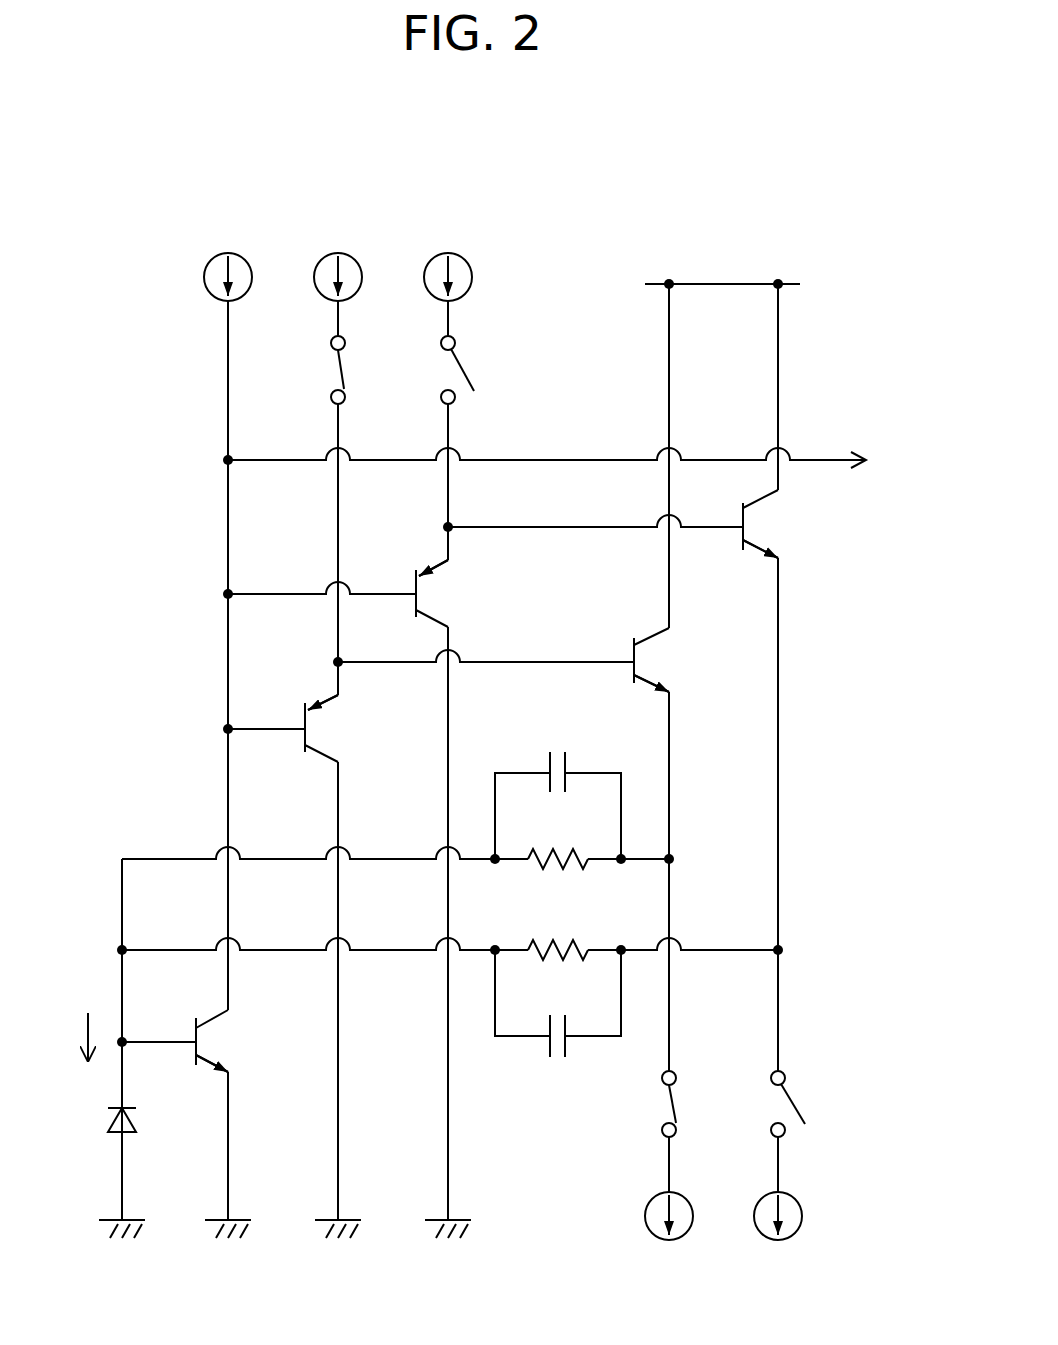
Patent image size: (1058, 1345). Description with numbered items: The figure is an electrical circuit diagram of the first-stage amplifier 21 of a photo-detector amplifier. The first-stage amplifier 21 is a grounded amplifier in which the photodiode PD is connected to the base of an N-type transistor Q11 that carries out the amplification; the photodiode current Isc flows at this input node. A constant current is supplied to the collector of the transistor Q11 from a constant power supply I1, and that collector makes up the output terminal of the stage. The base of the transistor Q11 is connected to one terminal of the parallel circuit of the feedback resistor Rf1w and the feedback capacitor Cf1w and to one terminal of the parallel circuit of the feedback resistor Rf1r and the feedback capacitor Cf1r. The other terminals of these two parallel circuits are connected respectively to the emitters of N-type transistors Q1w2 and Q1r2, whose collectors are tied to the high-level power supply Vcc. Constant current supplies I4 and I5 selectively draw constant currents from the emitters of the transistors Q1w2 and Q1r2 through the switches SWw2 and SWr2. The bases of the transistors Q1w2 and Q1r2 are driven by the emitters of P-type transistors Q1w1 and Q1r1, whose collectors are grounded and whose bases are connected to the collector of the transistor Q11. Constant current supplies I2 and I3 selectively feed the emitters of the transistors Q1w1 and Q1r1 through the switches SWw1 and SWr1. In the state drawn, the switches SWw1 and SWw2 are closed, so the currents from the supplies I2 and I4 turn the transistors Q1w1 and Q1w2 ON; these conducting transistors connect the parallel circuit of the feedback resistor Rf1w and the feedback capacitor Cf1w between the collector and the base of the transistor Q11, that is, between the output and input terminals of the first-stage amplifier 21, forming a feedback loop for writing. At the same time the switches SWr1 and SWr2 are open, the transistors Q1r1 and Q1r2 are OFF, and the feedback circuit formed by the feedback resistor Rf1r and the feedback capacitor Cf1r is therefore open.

The first-stage amplifier 21 is at (104, 312).
The constant power supply I1 is at (228, 263).
The constant current supply I2 is at (338, 263).
The constant current supply I3 is at (448, 263).
The constant current supply I4 is at (669, 1232).
The constant current supply I5 is at (778, 1232).
The switch SWw1 is at (341, 378).
The switch SWr1 is at (472, 384).
The switch SWw2 is at (666, 1116).
The switch SWr2 is at (800, 1111).
The high-level power supply Vcc is at (826, 285).
The P-type transistor Q1r1 is at (420, 603).
The N-type transistor Q1r2 is at (748, 535).
The P-type transistor Q1w1 is at (308, 736).
The N-type transistor Q1w2 is at (638, 668).
The N-type transistor Q11 is at (202, 1053).
The feedback capacitor Cf1w is at (556, 752).
The feedback resistor Rf1w is at (550, 867).
The feedback resistor Rf1r is at (536, 943).
The feedback capacitor Cf1r is at (557, 1059).
The short-circuit current Isc is at (61, 1037).
The photodiode PD is at (107, 1121).